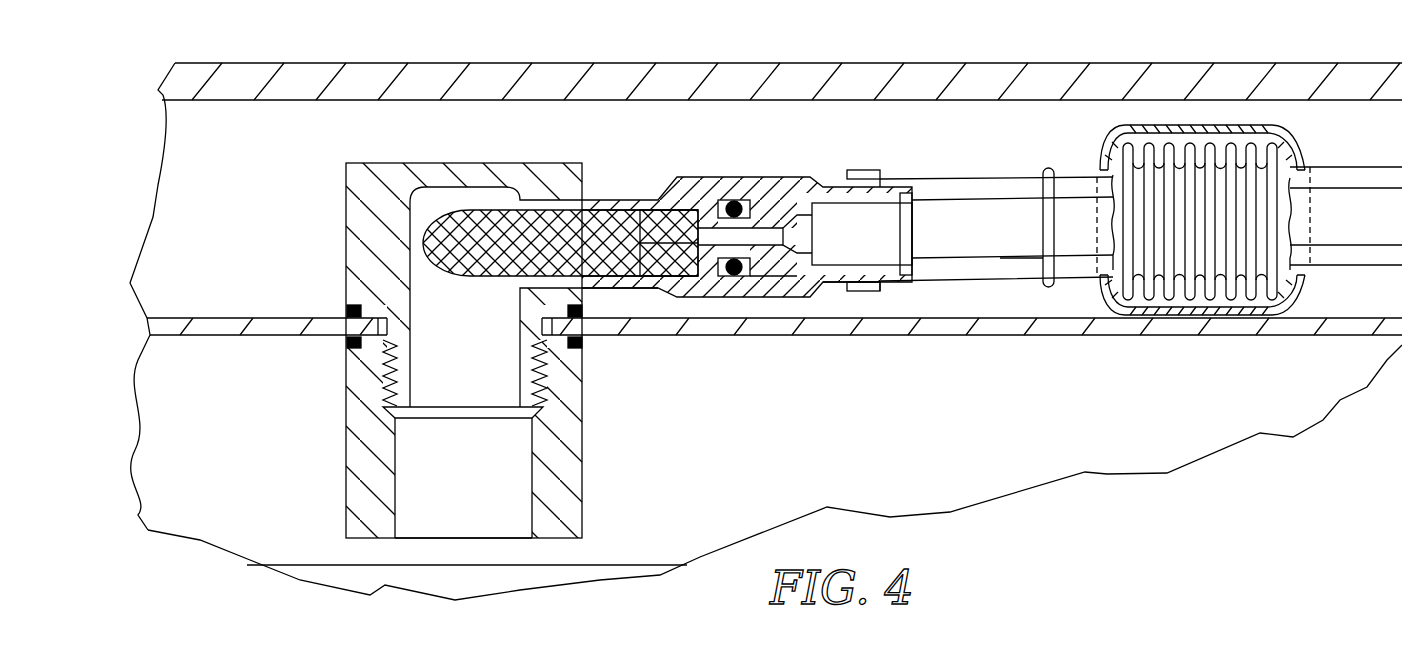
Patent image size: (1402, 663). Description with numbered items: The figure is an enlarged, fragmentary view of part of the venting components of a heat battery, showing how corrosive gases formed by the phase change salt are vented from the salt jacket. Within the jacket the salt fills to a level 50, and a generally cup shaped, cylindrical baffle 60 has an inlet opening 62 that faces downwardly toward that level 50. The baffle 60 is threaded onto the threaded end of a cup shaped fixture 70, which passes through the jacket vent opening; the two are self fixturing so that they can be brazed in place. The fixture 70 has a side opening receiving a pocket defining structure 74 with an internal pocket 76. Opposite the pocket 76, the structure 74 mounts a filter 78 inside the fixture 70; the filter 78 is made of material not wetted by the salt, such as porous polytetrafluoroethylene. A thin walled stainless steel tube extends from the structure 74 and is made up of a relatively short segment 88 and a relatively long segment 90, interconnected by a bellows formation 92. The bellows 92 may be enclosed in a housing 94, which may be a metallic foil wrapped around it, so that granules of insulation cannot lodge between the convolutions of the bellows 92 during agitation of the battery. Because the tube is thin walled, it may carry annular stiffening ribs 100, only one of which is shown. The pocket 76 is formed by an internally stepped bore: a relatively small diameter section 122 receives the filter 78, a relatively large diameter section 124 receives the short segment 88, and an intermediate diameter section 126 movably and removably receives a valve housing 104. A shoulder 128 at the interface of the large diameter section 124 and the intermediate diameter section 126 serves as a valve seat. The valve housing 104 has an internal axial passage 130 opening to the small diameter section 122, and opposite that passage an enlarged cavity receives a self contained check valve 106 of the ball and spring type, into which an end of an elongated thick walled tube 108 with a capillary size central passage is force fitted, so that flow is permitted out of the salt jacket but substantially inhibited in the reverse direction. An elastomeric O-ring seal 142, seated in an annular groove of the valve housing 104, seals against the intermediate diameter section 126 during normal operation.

The level 50 is at (605, 565).
The baffle 60 is at (552, 458).
The inlet opening 62 is at (500, 540).
The cup shaped fixture 70 is at (360, 250).
The pocket defining structure 74 is at (604, 200).
The pocket 76 is at (780, 210).
The filter 78 is at (482, 218).
The short segment 88 is at (985, 196).
The long segment 90 is at (1340, 166).
The bellows formation 92 is at (1167, 302).
The housing 94 is at (1175, 125).
The stiffening ribs 100 is at (1043, 230).
The valve housing 104 is at (698, 212).
The check valve 106 is at (847, 245).
The thick walled tube 108 is at (1012, 198).
The small diameter section 122 is at (604, 287).
The large diameter section 124 is at (877, 210).
The intermediate diameter section 126 is at (790, 285).
The shoulder 128 is at (850, 285).
The axial passage 130 is at (730, 282).
The O-ring seal 142 is at (752, 283).